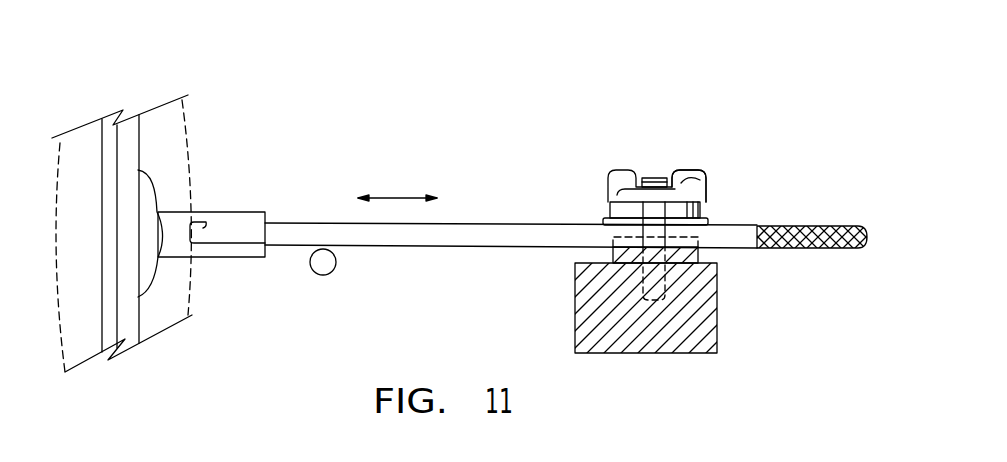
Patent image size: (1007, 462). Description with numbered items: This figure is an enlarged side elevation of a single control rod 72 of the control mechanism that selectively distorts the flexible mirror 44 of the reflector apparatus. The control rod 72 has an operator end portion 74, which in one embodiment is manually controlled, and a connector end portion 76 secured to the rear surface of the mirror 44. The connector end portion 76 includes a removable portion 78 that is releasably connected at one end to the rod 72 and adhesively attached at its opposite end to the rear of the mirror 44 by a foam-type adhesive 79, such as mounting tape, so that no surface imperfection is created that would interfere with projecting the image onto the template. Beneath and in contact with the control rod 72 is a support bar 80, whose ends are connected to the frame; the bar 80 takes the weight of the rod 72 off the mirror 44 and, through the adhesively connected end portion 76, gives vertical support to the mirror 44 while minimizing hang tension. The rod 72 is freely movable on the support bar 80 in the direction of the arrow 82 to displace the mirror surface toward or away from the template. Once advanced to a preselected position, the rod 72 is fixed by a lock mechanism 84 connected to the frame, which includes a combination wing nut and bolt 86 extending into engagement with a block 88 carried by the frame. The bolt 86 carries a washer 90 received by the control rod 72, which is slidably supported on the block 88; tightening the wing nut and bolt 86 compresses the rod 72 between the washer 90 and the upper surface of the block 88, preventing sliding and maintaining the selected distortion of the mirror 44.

The mirror 44 is at (82, 142).
The control rod 72 is at (482, 232).
The operator end portion 74 is at (787, 223).
The connector end portion 76 is at (228, 211).
The removable portion 78 is at (173, 248).
The foam-type adhesive 79 is at (145, 187).
The support bar 80 is at (333, 263).
The arrow 82 is at (395, 193).
The lock mechanism 84 is at (632, 143).
The wing nut and bolt 86 is at (683, 178).
The block 88 is at (697, 287).
The washer 90 is at (607, 218).